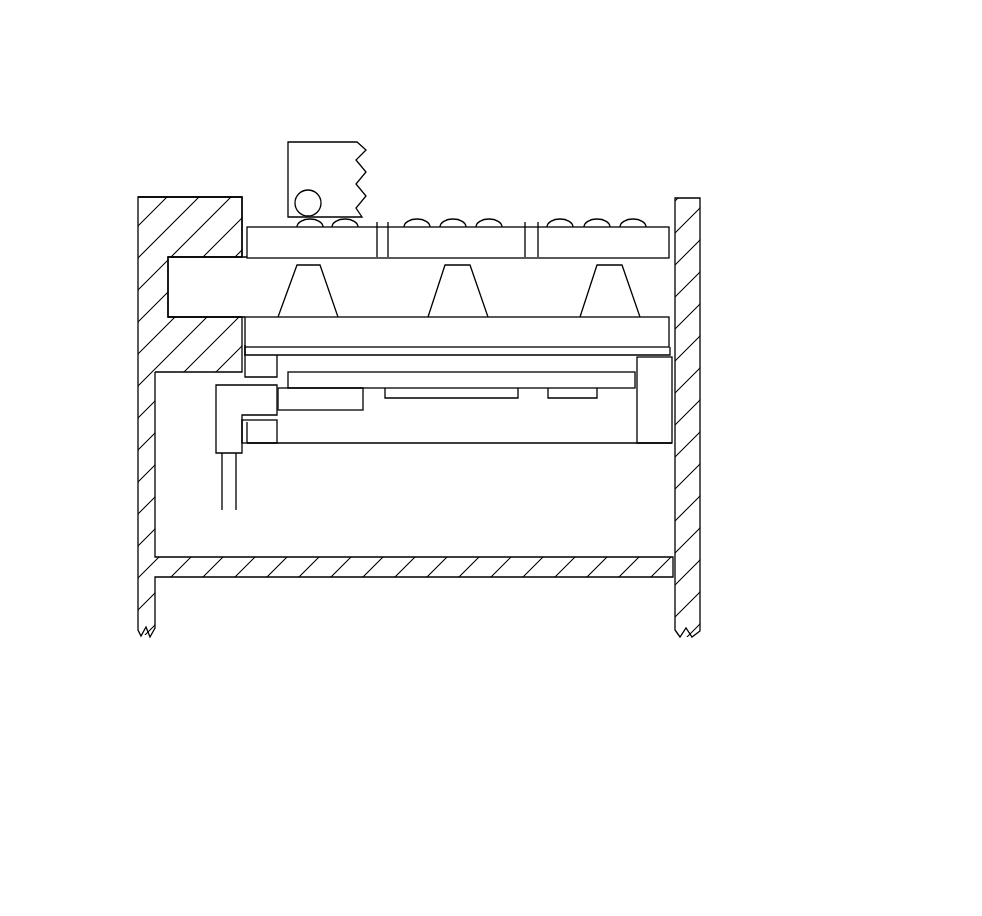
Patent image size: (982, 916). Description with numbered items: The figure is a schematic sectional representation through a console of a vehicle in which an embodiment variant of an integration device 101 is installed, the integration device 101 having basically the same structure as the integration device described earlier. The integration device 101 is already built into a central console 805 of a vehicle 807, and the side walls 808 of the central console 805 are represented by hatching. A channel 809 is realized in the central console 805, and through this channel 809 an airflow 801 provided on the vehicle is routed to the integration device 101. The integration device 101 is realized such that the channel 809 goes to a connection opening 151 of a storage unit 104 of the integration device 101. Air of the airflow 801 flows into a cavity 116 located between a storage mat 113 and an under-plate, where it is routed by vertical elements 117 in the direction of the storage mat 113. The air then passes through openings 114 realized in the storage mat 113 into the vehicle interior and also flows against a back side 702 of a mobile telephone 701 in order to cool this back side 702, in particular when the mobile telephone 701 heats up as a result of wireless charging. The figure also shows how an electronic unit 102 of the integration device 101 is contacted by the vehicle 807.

The integration device 101 is at (653, 110).
The vehicle 807 is at (717, 118).
The side walls 808 is at (157, 237).
The central console 805 is at (700, 243).
The channel 809 is at (185, 283).
The airflow 801 is at (210, 283).
The connection opening 151 is at (243, 287).
The storage unit 104 is at (545, 210).
The storage mat 113 is at (577, 243).
The openings 114 is at (383, 222).
The cavity 116 is at (410, 287).
The vertical elements 117 is at (308, 293).
The mobile telephone 701 is at (338, 158).
The back side 702 is at (326, 224).
The electronic unit 102 is at (643, 463).